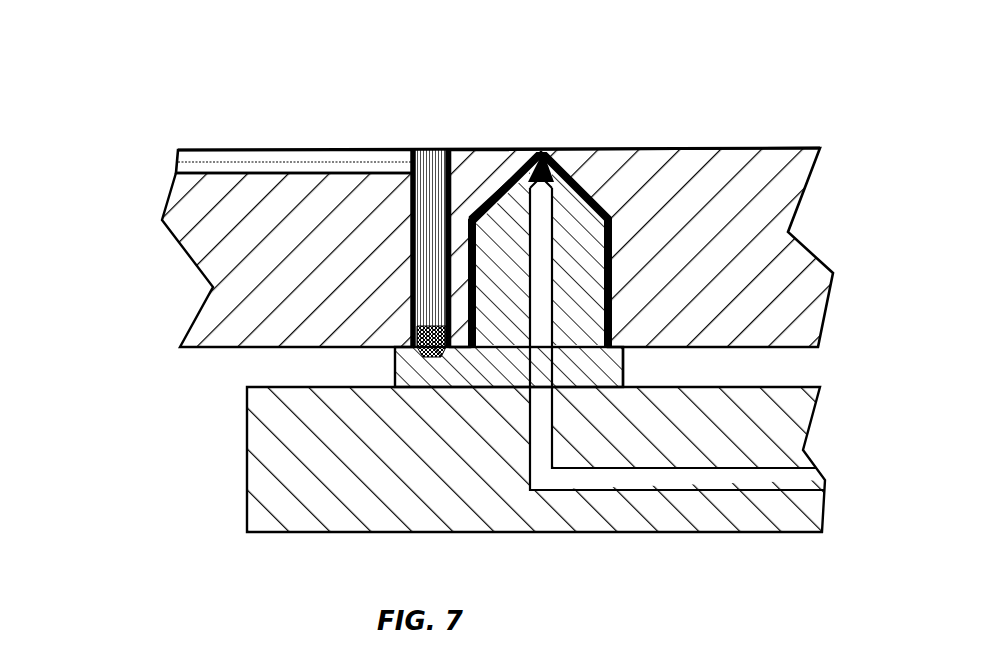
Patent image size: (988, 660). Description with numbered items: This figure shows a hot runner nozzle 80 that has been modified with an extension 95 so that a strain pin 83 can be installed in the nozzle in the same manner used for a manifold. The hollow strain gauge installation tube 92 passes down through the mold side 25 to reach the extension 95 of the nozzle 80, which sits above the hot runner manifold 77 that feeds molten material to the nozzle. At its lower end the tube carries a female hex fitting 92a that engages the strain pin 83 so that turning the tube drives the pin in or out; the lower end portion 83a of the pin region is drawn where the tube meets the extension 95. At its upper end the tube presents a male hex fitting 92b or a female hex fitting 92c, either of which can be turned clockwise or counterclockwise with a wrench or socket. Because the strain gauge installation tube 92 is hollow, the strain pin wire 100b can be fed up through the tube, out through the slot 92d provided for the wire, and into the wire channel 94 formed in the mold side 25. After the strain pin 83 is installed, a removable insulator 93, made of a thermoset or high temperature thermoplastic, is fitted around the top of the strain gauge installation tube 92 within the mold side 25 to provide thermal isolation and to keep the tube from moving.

The mold side 25 is at (672, 217).
The hot runner manifold 77 is at (270, 416).
The hot runner nozzle 80 is at (625, 367).
The strain pin 83 is at (407, 322).
The slot wall end portion 83a is at (413, 343).
The strain gauge installation tube 92 is at (410, 257).
The female hex fitting 92a is at (410, 335).
The male hex fitting 92b is at (455, 148).
The female hex fitting 92c is at (424, 148).
The slot 92d is at (436, 148).
The removable insulator 93 is at (412, 148).
The wire channel 94 is at (178, 148).
The extension 95 is at (395, 366).
The strain pin wire 100b is at (466, 218).